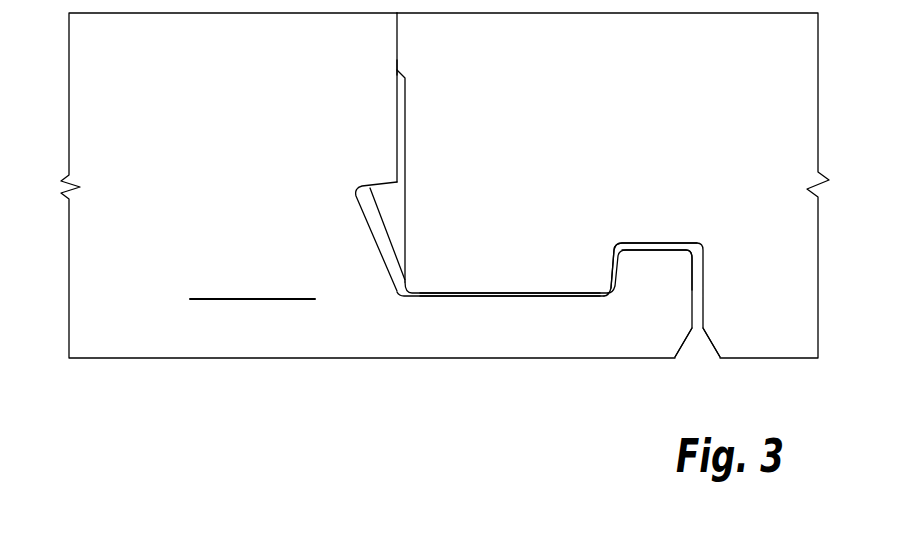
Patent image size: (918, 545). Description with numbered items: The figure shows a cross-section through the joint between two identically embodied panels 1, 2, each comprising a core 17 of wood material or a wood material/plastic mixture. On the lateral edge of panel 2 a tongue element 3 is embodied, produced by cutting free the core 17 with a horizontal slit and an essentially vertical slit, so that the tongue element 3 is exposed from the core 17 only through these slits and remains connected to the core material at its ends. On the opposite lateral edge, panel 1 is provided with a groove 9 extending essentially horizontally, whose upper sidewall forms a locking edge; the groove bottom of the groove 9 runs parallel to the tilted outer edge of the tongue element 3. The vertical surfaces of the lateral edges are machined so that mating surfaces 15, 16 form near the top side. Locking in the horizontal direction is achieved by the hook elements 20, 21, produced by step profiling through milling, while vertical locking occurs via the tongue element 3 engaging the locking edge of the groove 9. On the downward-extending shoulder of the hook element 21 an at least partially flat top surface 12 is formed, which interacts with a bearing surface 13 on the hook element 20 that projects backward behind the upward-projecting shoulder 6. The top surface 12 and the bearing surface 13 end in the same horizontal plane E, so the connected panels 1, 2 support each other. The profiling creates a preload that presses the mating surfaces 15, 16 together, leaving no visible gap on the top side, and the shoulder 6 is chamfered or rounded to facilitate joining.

The panel 1 is at (107, 77).
The panel 2 is at (790, 63).
The tongue element 3 is at (393, 218).
The shoulder 6 is at (662, 293).
The groove 9 is at (378, 235).
The top surface 12 is at (504, 286).
The bearing surface 13 is at (541, 304).
The mating surface 15 is at (391, 57).
The mating surface 16 is at (403, 45).
The core 17 is at (232, 192).
The hook element 20 is at (690, 372).
The hook element 21 is at (580, 258).
The horizontal plane E is at (247, 299).